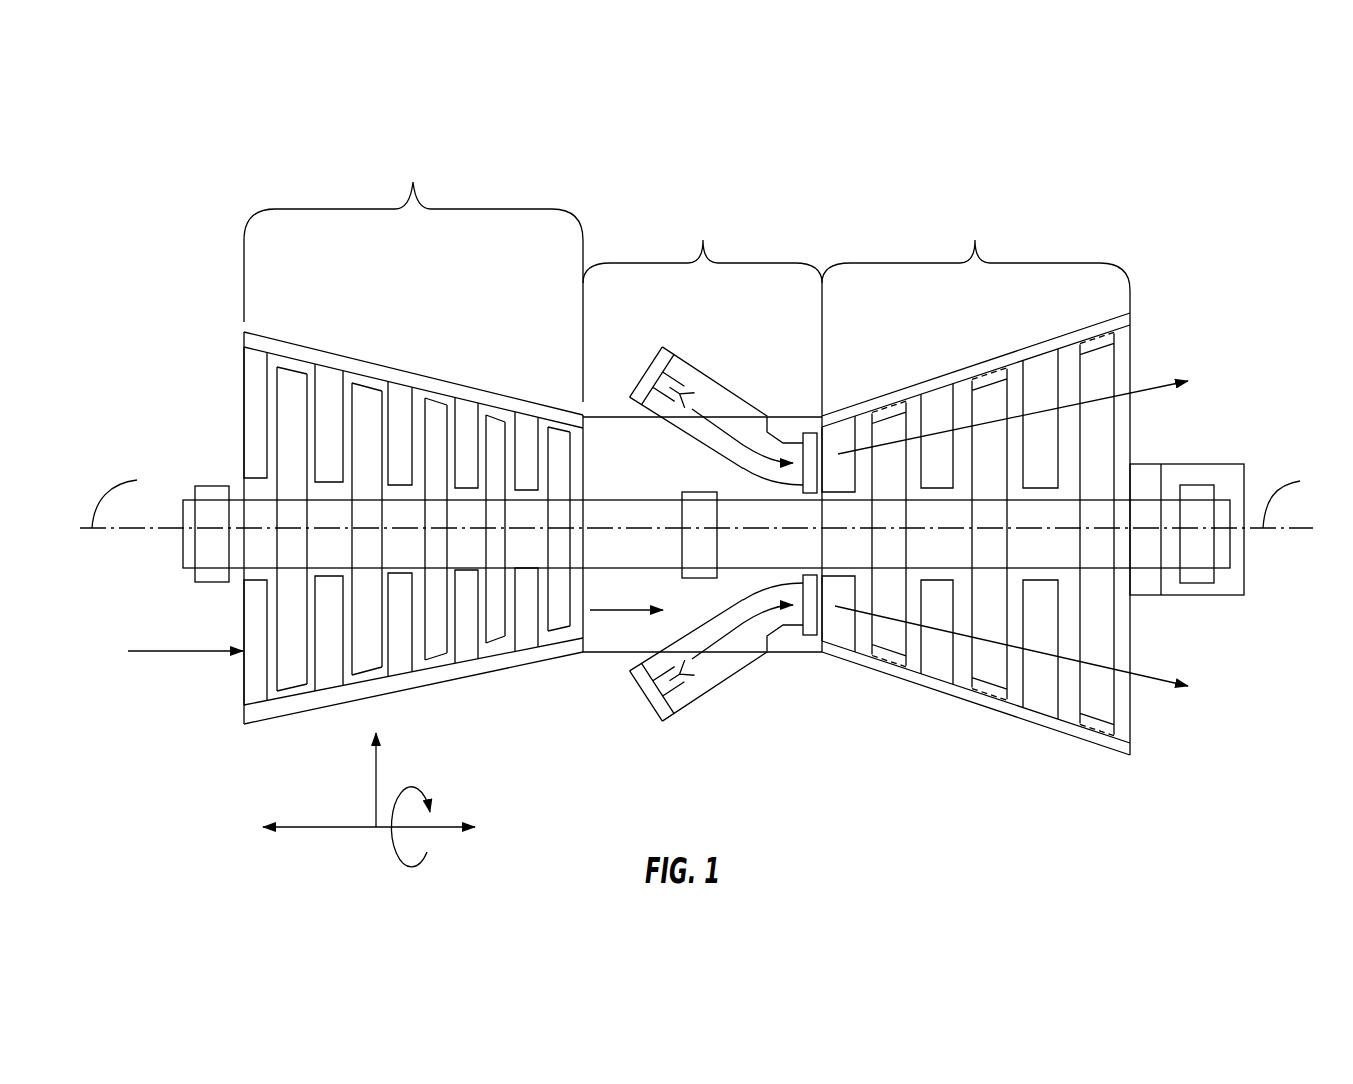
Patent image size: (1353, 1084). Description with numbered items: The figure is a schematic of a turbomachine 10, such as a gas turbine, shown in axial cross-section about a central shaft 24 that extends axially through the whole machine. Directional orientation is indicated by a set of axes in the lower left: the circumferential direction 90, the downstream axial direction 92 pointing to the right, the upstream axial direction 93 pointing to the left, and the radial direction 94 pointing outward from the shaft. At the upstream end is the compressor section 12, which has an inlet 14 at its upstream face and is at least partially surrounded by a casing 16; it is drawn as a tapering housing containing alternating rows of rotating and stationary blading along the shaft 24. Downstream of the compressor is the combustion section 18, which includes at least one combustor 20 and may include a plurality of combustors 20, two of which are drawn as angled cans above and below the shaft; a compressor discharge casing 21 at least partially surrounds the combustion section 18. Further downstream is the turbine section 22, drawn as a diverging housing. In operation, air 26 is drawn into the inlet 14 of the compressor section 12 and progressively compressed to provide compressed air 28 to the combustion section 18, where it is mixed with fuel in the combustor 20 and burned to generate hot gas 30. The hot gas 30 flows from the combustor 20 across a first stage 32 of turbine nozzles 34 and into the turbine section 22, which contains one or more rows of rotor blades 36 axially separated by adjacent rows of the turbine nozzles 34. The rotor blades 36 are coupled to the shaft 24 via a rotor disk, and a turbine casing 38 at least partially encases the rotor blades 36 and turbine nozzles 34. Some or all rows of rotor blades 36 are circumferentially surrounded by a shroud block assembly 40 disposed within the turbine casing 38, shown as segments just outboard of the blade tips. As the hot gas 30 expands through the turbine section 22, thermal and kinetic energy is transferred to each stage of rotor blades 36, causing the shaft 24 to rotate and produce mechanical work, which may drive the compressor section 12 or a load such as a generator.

The turbomachine 10 is at (640, 167).
The compressor section 12 is at (358, 460).
The inlet 14 is at (243, 405).
The casing 16 is at (262, 725).
The combustion section 18 is at (702, 483).
The combustor 20 is at (693, 398).
The compressor discharge casing 21 is at (758, 408).
The turbine section 22 is at (998, 502).
The shaft 24 is at (1168, 500).
The air 26 is at (185, 650).
The compressed air 28 is at (602, 610).
The hot gas 30 is at (715, 418).
The first stage 32 is at (837, 665).
The turbine nozzles 34 is at (932, 420).
The rotor blades 36 is at (885, 635).
The turbine casing 38 is at (1060, 740).
The shroud block assembly 40 is at (988, 383).
The circumferential direction 90 is at (393, 847).
The downstream axial direction 92 is at (440, 825).
The upstream axial direction 93 is at (320, 828).
The radial direction 94 is at (376, 778).